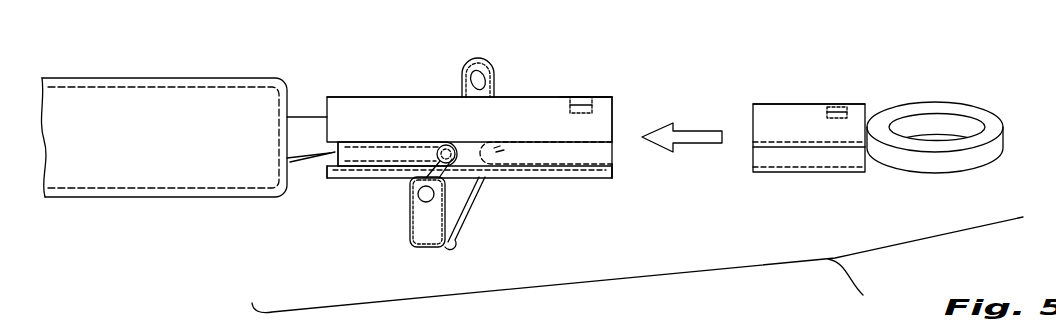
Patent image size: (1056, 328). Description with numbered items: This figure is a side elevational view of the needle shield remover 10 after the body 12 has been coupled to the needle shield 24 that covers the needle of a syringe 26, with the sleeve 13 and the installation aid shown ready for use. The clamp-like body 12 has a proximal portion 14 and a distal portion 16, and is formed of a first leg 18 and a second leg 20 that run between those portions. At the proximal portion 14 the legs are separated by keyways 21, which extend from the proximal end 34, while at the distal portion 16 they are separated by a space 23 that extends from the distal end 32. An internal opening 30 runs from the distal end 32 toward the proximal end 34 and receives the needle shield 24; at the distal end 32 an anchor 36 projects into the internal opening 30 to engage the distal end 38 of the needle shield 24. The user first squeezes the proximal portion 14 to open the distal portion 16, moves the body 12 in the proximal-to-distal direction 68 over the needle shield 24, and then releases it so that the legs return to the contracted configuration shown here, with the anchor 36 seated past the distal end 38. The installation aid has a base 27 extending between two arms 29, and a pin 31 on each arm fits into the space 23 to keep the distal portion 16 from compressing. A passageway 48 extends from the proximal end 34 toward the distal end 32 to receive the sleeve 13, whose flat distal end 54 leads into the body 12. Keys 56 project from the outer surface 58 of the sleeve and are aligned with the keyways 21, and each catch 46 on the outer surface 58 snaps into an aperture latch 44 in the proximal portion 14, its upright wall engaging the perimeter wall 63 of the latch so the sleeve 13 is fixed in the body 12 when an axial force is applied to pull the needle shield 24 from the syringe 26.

The needle shield remover 10 is at (948, 87).
The body 12 is at (457, 72).
The sleeve 13 is at (872, 190).
The proximal portion 14 is at (605, 105).
The distal portion 16 is at (343, 105).
The first leg 18 is at (445, 110).
The second leg 20 is at (407, 170).
The keyways 21 is at (572, 155).
The space 23 is at (373, 152).
The needle shield 24 is at (360, 153).
The syringe 26 is at (172, 103).
The base 27 is at (457, 210).
The arms 29 is at (415, 237).
The internal opening 30 is at (318, 143).
The pin 31 is at (433, 157).
The distal end 32 is at (327, 167).
The proximal end 34 is at (610, 173).
The anchor 36 is at (335, 167).
The distal end of the needle shield 38 is at (335, 152).
The aperture latches 44 is at (582, 97).
The catch 46 is at (840, 107).
The passageway 48 is at (612, 152).
The distal end of the base 54 is at (752, 152).
The keys 56 is at (820, 157).
The outer surface 58 is at (772, 115).
The perimeter wall 63 is at (598, 97).
The direction 68 is at (685, 137).